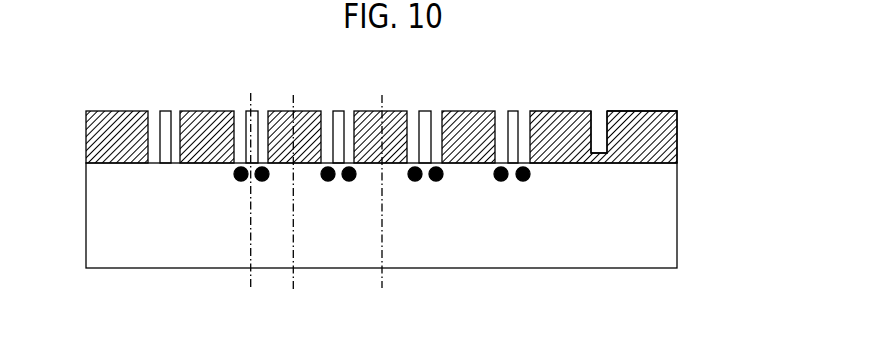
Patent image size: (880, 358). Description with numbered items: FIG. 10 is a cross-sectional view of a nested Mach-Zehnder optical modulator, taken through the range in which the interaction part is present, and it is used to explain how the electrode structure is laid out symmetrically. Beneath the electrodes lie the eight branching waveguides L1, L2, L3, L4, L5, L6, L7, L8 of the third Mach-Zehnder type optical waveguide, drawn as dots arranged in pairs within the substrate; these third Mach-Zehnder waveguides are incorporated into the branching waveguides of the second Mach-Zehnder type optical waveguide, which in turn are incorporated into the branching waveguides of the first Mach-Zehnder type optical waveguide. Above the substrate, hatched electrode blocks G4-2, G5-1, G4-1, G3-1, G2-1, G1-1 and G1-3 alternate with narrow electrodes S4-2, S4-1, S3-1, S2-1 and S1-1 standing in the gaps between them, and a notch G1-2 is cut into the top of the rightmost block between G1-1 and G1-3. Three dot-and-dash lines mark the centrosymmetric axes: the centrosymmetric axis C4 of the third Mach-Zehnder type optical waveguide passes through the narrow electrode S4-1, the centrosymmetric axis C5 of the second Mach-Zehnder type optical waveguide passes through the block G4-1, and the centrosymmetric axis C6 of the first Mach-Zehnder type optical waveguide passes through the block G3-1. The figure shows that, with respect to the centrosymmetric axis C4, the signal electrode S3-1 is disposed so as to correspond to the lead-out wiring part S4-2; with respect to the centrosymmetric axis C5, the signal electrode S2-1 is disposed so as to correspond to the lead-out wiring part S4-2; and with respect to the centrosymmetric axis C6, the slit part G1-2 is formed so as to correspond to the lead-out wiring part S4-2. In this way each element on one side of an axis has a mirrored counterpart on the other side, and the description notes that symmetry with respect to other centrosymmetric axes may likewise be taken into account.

The electrode portion G4-2 is at (112, 111).
The lead-out wiring part S4-2 is at (165, 111).
The electrode portion G5-1 is at (208, 111).
The slit S4-1 is at (257, 111).
The electrode portion G4-1 is at (307, 111).
The signal electrode S3-1 is at (343, 111).
The electrode portion G3-1 is at (398, 111).
The signal electrode S2-1 is at (428, 111).
The electrode portion G2-1 is at (468, 111).
The slit S1-1 is at (515, 111).
The electrode portion G1-1 is at (570, 111).
The slit part G1-2 is at (600, 110).
The electrode portion G1-3 is at (648, 120).
The centrosymmetric axis C4 is at (249, 205).
The centrosymmetric axis C5 is at (295, 206).
The centrosymmetric axis C6 is at (386, 205).
The branching waveguide L1 is at (241, 181).
The branching waveguide L2 is at (262, 181).
The branching waveguide L3 is at (328, 181).
The branching waveguide L4 is at (349, 181).
The branching waveguide L5 is at (415, 181).
The branching waveguide L6 is at (436, 181).
The branching waveguide L7 is at (501, 181).
The branching waveguide L8 is at (523, 181).